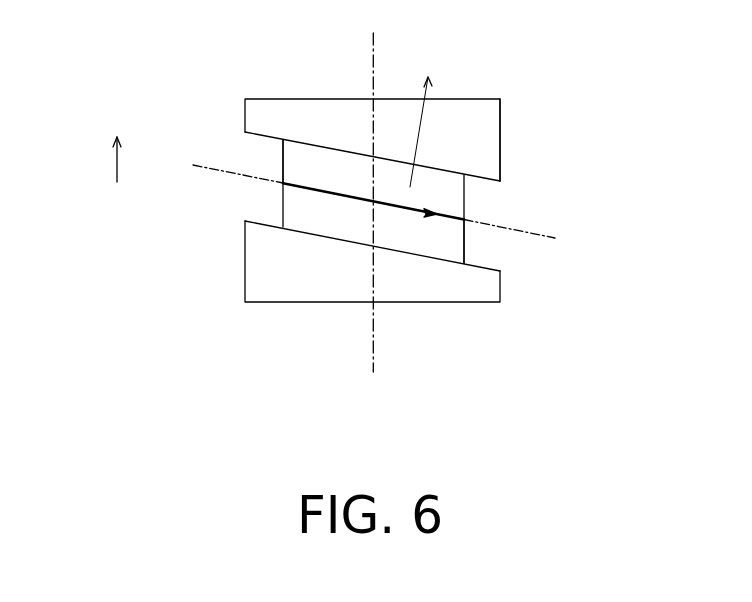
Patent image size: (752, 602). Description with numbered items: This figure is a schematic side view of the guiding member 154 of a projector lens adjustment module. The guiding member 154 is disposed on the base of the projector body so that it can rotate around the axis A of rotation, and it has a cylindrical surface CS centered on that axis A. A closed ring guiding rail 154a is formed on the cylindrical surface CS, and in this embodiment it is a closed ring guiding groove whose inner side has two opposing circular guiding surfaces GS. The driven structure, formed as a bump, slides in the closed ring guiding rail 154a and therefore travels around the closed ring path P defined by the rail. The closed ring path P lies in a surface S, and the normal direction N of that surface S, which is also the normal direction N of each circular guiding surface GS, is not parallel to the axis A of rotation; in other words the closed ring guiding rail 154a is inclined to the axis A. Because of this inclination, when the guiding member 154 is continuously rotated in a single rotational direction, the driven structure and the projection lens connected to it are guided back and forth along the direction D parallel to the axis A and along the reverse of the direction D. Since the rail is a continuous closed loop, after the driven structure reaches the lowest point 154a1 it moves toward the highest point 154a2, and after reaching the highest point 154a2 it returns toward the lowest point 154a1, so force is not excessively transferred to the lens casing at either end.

The guiding member 154 is at (488, 123).
The closed ring guiding rail 154a is at (467, 197).
The lowest point 154a1 is at (498, 246).
The highest point 154a2 is at (269, 192).
The circular guiding surfaces GS is at (305, 141).
The cylindrical surface CS is at (502, 155).
The closed ring path P is at (340, 194).
The normal direction N is at (428, 92).
The axis of rotation A is at (373, 55).
The surface S is at (216, 168).
The direction D is at (113, 160).